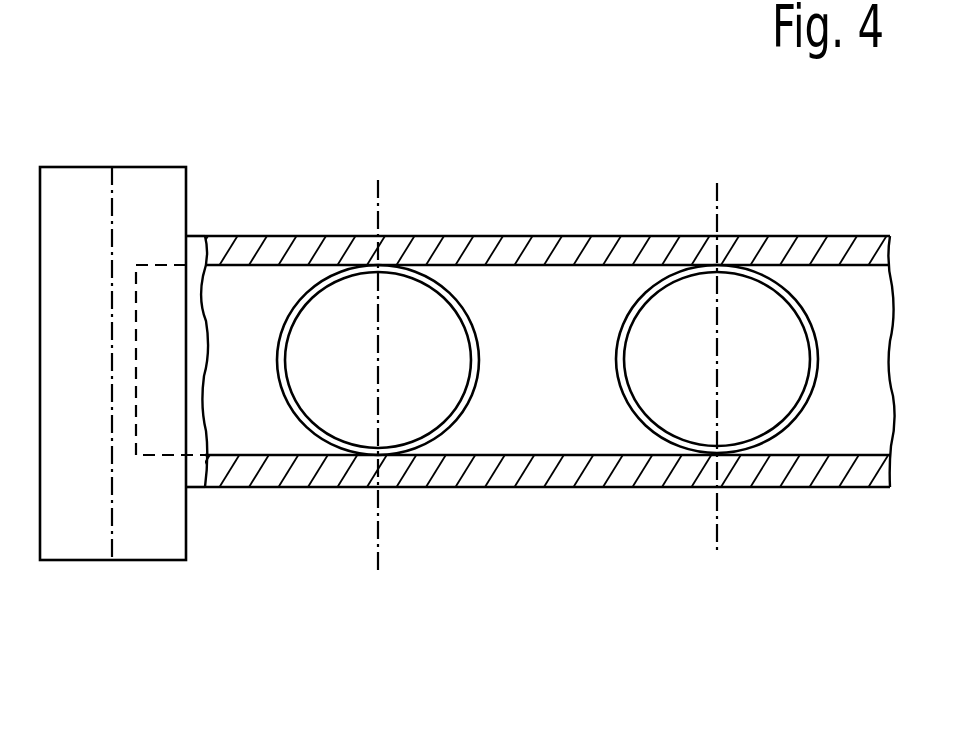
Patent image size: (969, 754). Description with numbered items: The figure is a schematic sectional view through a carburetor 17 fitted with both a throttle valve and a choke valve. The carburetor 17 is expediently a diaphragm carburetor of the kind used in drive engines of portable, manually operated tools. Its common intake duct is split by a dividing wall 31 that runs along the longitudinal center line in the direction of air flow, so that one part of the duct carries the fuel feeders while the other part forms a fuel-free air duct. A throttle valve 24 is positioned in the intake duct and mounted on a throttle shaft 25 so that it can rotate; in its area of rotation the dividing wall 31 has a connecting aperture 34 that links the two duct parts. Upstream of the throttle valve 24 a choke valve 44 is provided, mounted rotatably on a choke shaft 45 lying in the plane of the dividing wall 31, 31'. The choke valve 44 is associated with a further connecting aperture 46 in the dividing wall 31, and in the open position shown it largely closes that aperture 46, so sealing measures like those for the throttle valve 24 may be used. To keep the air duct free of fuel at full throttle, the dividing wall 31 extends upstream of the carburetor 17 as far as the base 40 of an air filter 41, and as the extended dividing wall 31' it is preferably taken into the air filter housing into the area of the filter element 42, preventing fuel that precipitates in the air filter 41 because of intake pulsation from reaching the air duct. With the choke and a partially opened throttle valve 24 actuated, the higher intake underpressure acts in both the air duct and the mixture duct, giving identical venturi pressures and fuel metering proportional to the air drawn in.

The carburetor 17 is at (537, 247).
The throttle valve 24 is at (675, 415).
The throttle shaft 25 is at (719, 537).
The dividing wall 31 is at (554, 361).
The dividing wall 31' is at (221, 318).
The connecting aperture 34 is at (770, 277).
The base of air filter 40 is at (188, 213).
The air filter 41 is at (143, 165).
The filter element 42 is at (108, 225).
The choke valve 44 is at (415, 293).
The choke shaft 45 is at (380, 547).
The further connecting aperture 46 is at (432, 283).